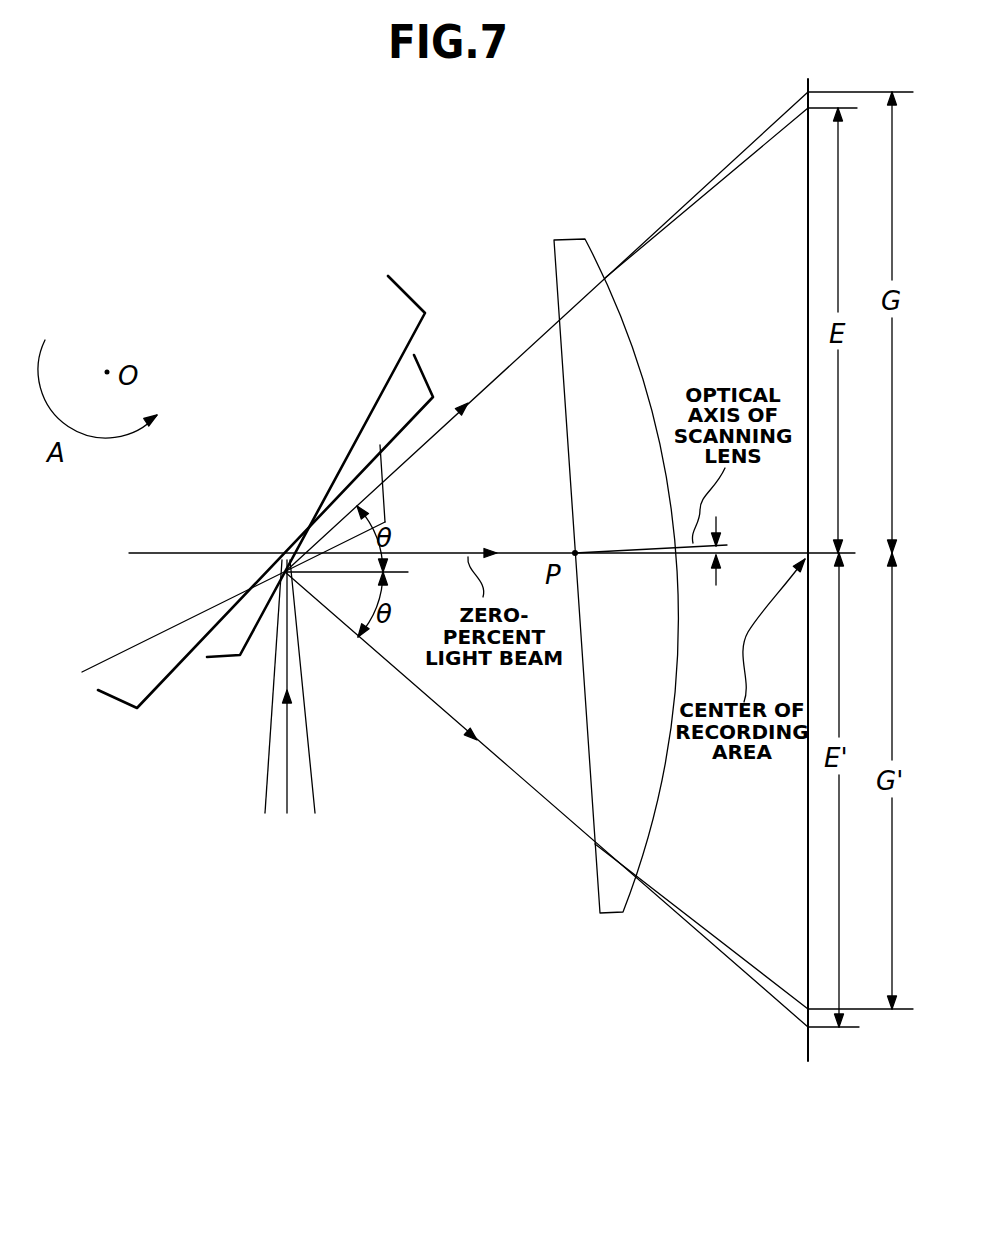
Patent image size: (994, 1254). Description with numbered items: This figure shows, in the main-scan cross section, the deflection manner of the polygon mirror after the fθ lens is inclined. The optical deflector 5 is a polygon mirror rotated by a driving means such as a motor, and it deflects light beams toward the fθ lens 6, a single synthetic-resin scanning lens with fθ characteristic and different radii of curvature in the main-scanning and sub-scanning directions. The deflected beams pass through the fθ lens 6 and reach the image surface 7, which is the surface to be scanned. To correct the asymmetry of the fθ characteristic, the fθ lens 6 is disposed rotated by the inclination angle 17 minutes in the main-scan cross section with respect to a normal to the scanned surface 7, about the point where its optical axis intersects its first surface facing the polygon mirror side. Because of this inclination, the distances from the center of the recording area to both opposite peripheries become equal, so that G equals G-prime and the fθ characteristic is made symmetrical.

The optical deflector 5 is at (130, 628).
The fθ lens 6 is at (554, 262).
The image surface 7 is at (808, 920).
The tilt angle (17 minutes) between scanning lens optical axis and zero-percent ligh 17 is at (669, 548).